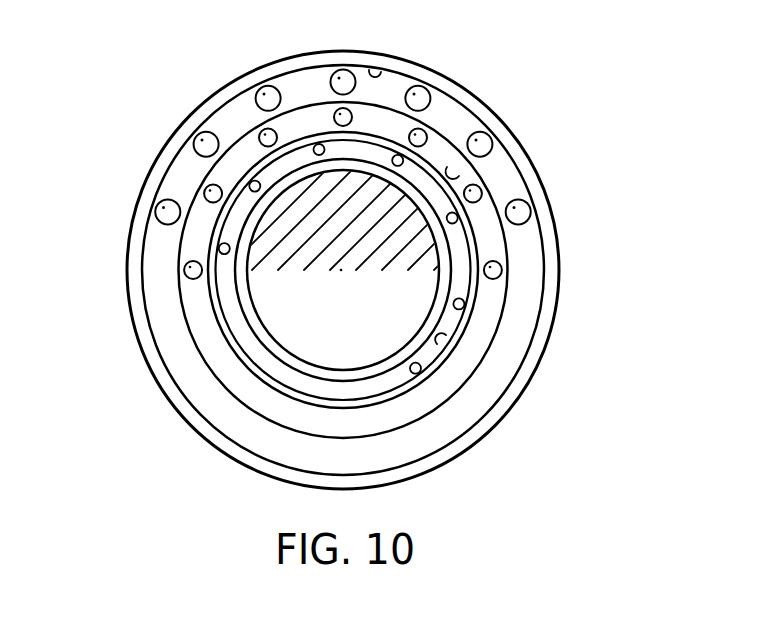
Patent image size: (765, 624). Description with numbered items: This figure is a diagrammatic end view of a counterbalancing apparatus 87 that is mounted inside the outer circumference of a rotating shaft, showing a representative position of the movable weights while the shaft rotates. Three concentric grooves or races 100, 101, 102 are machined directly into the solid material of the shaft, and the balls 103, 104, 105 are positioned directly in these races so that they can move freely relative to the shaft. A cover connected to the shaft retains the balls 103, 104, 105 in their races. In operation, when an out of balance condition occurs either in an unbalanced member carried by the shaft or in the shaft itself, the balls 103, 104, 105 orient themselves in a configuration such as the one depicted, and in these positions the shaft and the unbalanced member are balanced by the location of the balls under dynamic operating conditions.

The counterbalancing apparatus 87 is at (134, 125).
The race 100 is at (378, 70).
The race 101 is at (505, 160).
The race 102 is at (446, 344).
The balls 103 is at (422, 136).
The balls 104 is at (453, 165).
The balls 105 is at (456, 222).